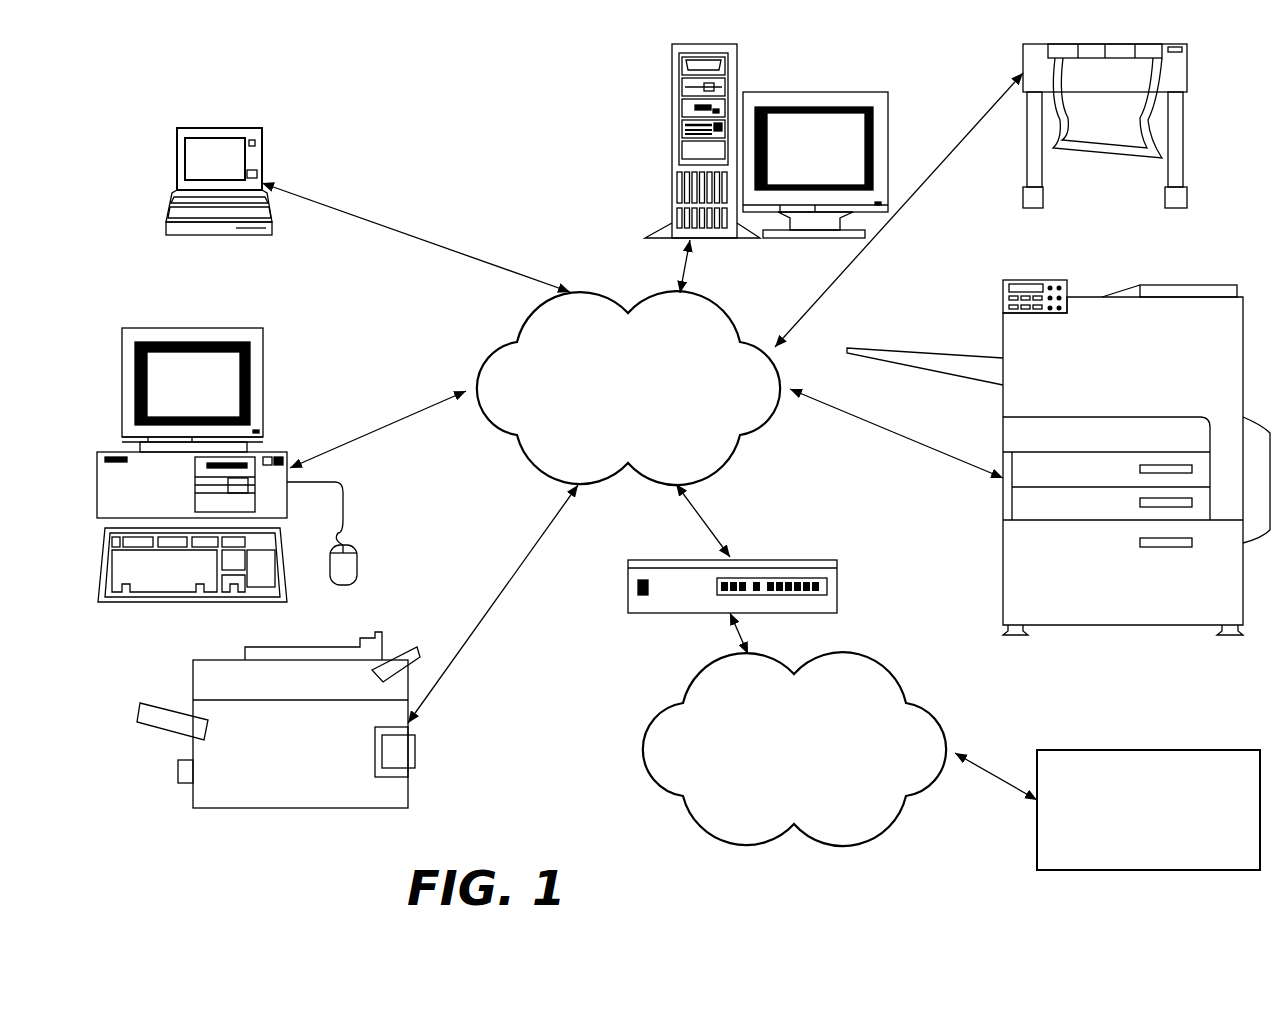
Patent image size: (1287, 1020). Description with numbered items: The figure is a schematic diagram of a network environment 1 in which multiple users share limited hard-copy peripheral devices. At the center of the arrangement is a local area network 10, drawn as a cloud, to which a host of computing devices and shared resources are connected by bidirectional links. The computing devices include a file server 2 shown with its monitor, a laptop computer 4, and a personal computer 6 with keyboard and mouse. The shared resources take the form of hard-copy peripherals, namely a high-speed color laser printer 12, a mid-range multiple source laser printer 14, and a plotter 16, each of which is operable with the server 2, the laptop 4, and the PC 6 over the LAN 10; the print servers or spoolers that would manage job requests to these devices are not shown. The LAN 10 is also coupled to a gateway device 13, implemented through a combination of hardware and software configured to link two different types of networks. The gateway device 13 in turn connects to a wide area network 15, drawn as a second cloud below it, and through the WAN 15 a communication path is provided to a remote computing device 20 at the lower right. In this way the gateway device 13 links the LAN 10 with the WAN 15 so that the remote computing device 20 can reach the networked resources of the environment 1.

The network environment 1 is at (472, 155).
The file server 2 is at (670, 133).
The laptop computer 4 is at (220, 128).
The personal computer 6 is at (193, 325).
The local area network 10 is at (615, 439).
The high-speed color laser printer 12 is at (1175, 283).
The gateway device 13 is at (773, 560).
The mid-range multiple source laser printer 14 is at (415, 745).
The wide area network 15 is at (794, 749).
The plotter 16 is at (1188, 80).
The remote computing device 20 is at (1160, 750).